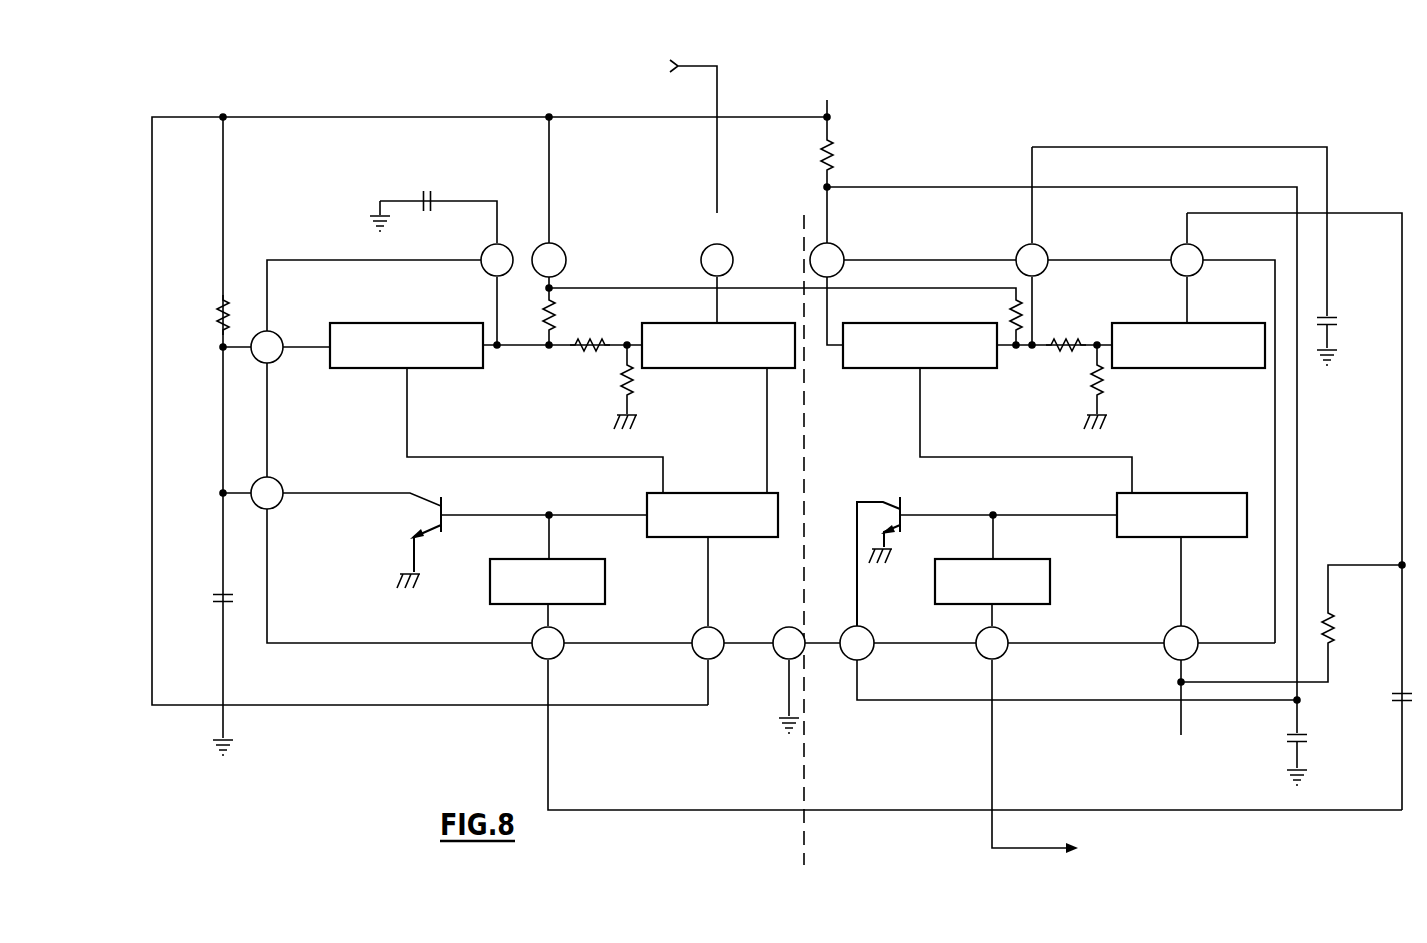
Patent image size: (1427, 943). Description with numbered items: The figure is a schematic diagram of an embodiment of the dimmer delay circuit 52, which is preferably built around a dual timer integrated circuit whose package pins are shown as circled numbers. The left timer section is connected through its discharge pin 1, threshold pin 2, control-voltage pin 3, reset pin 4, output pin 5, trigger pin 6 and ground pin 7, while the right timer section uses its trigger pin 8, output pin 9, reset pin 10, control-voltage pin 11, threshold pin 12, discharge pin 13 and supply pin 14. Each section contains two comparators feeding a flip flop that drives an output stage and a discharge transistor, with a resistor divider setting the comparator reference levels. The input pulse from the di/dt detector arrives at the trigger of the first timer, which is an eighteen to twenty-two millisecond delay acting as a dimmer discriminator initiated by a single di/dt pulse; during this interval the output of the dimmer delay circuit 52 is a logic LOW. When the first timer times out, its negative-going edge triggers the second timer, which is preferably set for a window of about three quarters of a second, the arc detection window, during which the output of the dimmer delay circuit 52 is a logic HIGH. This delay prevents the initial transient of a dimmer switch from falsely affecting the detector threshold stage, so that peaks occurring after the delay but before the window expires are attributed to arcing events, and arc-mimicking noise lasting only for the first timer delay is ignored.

The dimmer delay circuit 52 is at (1204, 116).
The pin 1 discharge 1 is at (267, 493).
The pin 2 threshold 2 is at (267, 347).
The pin 3 control voltage 3 is at (497, 260).
The pin 4 reset 4 is at (708, 643).
The pin 5 output 5 is at (548, 643).
The pin 6 trigger 6 is at (717, 260).
The pin 7 ground 7 is at (789, 643).
The pin 8 trigger 8 is at (1187, 260).
The pin 9 output 9 is at (992, 643).
The pin 10 reset 10 is at (1181, 643).
The pin 11 control voltage 11 is at (1032, 260).
The pin 12 threshold 12 is at (827, 260).
The pin 13 discharge 13 is at (857, 643).
The pin 14 Vcc 14 is at (549, 260).